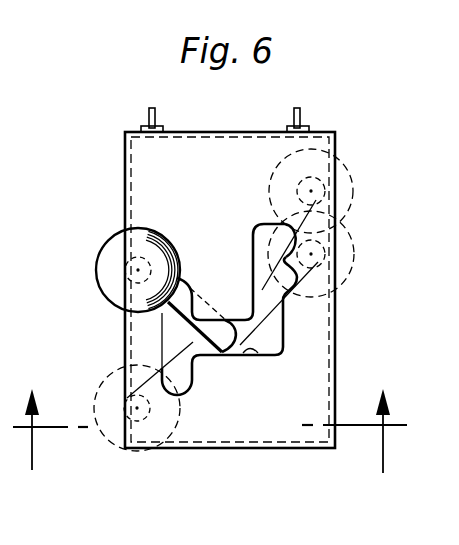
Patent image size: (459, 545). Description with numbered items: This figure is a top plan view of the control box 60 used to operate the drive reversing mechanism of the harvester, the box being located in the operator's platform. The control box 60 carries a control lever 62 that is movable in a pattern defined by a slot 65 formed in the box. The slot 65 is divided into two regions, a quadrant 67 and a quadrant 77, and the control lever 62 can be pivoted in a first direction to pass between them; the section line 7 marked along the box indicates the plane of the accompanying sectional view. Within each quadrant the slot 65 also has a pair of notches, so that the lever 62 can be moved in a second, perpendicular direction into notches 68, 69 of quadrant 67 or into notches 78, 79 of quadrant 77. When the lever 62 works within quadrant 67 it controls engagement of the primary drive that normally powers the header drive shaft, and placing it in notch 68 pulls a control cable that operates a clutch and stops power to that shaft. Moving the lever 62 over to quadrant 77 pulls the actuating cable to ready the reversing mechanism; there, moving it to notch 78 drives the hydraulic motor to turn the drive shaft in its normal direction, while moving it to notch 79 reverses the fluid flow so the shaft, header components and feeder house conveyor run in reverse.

The control box 60 is at (230, 301).
The control lever 62 is at (155, 229).
The slot 65 is at (240, 353).
The quadrant 67 is at (284, 317).
The notch 68 is at (272, 226).
The notch 69 is at (294, 272).
The quadrant 77 is at (164, 331).
The notch 78 is at (181, 284).
The notch 79 is at (162, 371).
The section line 7- 7 is at (210, 433).